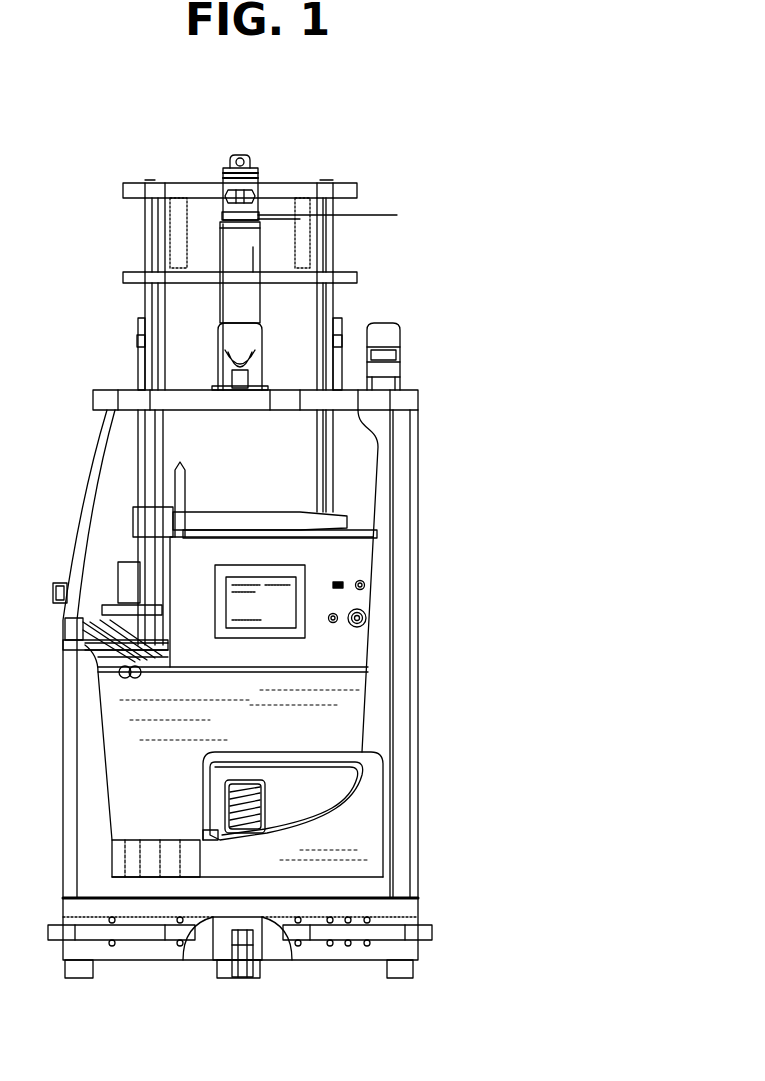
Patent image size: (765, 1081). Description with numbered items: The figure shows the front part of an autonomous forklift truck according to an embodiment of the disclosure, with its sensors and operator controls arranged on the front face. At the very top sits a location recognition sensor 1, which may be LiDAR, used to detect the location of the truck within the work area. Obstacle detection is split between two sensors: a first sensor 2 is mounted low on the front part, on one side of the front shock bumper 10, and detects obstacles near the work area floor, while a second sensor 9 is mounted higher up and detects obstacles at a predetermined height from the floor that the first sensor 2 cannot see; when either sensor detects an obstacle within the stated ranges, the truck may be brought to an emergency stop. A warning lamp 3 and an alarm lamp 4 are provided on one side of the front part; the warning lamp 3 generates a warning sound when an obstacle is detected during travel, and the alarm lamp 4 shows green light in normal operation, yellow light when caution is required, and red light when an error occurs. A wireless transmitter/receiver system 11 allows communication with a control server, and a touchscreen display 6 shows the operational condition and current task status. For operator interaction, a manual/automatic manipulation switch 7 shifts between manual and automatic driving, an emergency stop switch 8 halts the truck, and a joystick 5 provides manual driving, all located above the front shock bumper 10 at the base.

The location recognition sensor 1 is at (258, 182).
The first sensor 2 is at (252, 955).
The warning lamp 3 is at (393, 335).
The alarm lamp 4 is at (364, 585).
The joystick 5 is at (123, 577).
The touchscreen display 6 is at (273, 623).
The manual/automatic manipulation switch 7 is at (338, 582).
The emergency stop switch 8 is at (367, 618).
The second sensor 9 is at (235, 335).
The front shock bumper 10 is at (137, 935).
The wireless transmitter/receiver system 11 is at (177, 477).